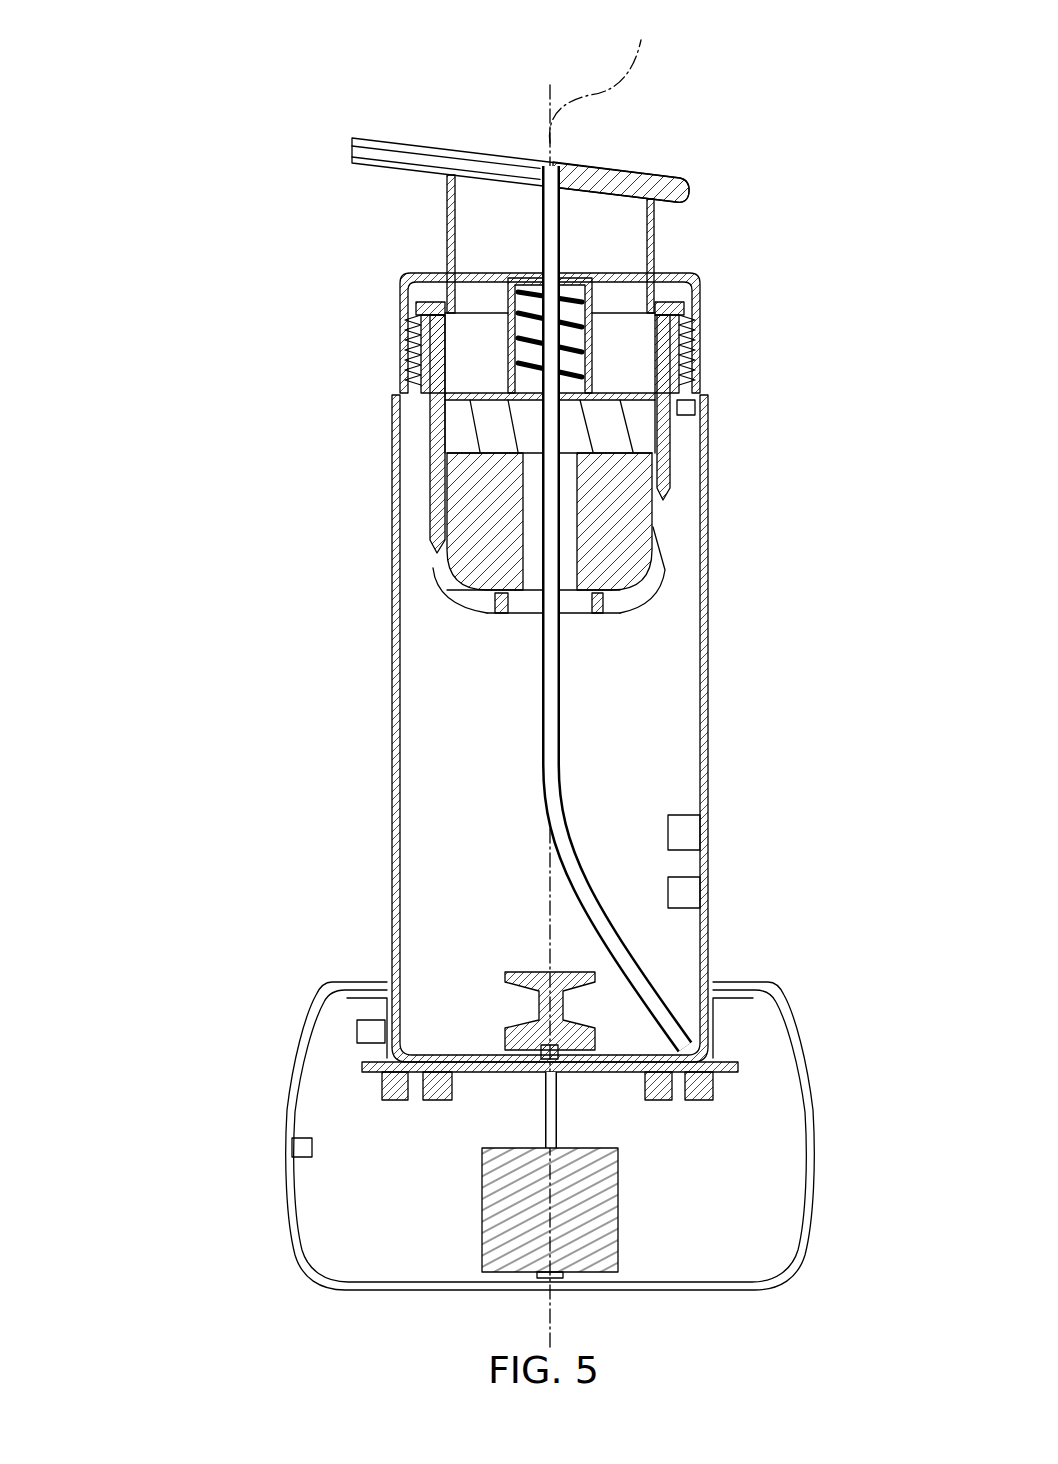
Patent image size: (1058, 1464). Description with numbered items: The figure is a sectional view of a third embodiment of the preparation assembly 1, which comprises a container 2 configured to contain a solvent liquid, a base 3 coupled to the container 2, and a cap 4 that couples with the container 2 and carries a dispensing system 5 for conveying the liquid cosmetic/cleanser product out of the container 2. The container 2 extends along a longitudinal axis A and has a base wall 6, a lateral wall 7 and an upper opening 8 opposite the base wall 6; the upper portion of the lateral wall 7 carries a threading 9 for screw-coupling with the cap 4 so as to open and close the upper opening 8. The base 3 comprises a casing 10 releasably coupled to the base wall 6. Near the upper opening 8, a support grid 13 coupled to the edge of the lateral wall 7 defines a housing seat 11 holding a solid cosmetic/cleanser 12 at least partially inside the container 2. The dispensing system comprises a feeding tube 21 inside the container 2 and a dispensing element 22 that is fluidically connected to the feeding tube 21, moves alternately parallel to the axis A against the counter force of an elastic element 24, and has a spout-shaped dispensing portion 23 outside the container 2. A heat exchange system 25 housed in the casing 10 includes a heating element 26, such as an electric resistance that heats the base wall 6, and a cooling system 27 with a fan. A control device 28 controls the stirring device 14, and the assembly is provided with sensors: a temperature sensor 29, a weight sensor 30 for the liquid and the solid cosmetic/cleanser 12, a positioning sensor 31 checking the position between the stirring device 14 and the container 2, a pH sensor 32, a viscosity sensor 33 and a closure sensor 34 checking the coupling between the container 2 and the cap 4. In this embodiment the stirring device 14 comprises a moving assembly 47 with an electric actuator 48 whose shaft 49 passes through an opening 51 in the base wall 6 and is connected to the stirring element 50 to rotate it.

The preparation assembly 1 is at (277, 233).
The container 2 is at (365, 718).
The base 3 is at (212, 1135).
The cap 4 is at (657, 138).
The dispensing system 5 is at (703, 258).
The base wall 6 is at (632, 1058).
The lateral wall 7 is at (392, 770).
The upper opening 8 is at (612, 318).
The threading 9 is at (365, 342).
The casing 10 is at (290, 1228).
The housing seat 11 is at (422, 478).
The solid cosmetic/cleanser 12 is at (643, 538).
The support grid 13 is at (670, 445).
The stirring device 14 is at (433, 1015).
The feeding tube 21 is at (562, 752).
The dispensing element 22 is at (495, 113).
The dispensing portion 23 is at (412, 157).
The elastic element 24 is at (512, 287).
The heat exchange system 25 is at (655, 1147).
The heating element 26 is at (435, 1092).
The cooling system 27 is at (658, 1090).
The control device 28 is at (298, 1148).
The temperature sensor 29 is at (388, 1083).
The weight sensor 30 is at (703, 1088).
The positioning sensor 31 is at (367, 1032).
The pH sensor 32 is at (690, 893).
The viscosity sensor 33 is at (690, 830).
The closure sensor 34 is at (688, 408).
The moving assembly 47 is at (647, 1240).
The electric actuator 48 is at (580, 1242).
The shaft 49 is at (548, 1120).
The stirring element 50 is at (513, 1043).
The opening 51 is at (535, 1030).
The longitudinal axis A is at (602, 679).